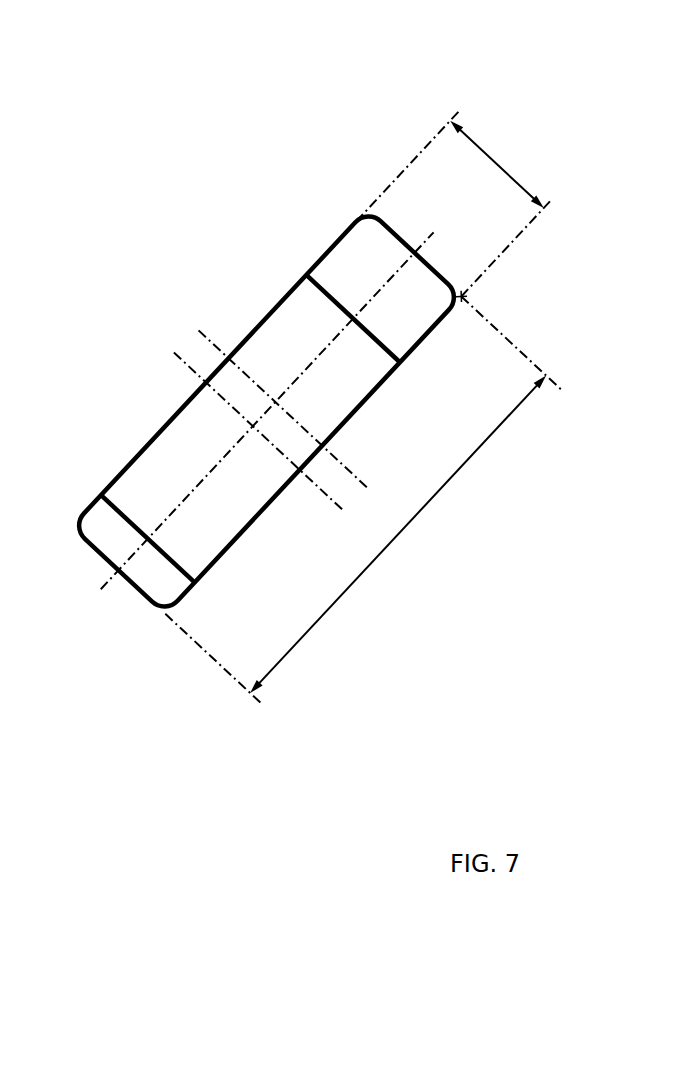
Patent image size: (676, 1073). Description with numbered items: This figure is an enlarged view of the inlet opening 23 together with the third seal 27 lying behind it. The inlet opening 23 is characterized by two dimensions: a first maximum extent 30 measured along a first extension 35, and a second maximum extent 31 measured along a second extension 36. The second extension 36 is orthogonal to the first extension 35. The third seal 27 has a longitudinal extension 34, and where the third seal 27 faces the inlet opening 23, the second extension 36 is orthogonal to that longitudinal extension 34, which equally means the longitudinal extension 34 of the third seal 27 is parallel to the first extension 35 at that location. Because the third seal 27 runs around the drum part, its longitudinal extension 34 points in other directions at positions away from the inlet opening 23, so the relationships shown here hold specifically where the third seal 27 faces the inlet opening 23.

The inlet opening 23 is at (323, 248).
The third seal 27 is at (282, 328).
The first maximum extent 30 is at (362, 501).
The second maximum extent 31 is at (455, 212).
The longitudinal extension 34 is at (197, 375).
The first extension 35 is at (100, 587).
The second extension 36 is at (222, 353).